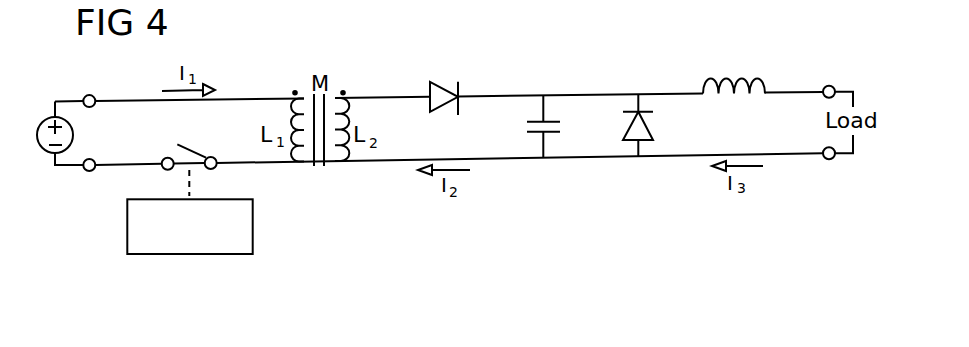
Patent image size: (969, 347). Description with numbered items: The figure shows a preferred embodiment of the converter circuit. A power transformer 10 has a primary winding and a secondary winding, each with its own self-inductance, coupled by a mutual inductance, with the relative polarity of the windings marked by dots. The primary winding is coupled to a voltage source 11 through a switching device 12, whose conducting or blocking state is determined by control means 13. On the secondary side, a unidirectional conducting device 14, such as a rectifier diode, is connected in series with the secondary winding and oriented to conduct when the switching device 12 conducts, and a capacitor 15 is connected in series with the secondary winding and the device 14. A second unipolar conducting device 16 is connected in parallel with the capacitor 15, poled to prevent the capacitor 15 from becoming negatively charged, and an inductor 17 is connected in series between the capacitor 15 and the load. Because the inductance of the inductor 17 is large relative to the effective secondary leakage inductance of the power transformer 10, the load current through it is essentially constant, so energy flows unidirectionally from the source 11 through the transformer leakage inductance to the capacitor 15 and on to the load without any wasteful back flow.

The power transformer 10 is at (320, 140).
The voltage source 11 is at (45, 135).
The switching device 12 is at (189, 148).
The control means 13 is at (176, 212).
The unidirectional conducting device 14 is at (444, 85).
The capacitor 15 is at (555, 126).
The second unipolar conducting device 16 is at (650, 125).
The inductor 17 is at (734, 73).